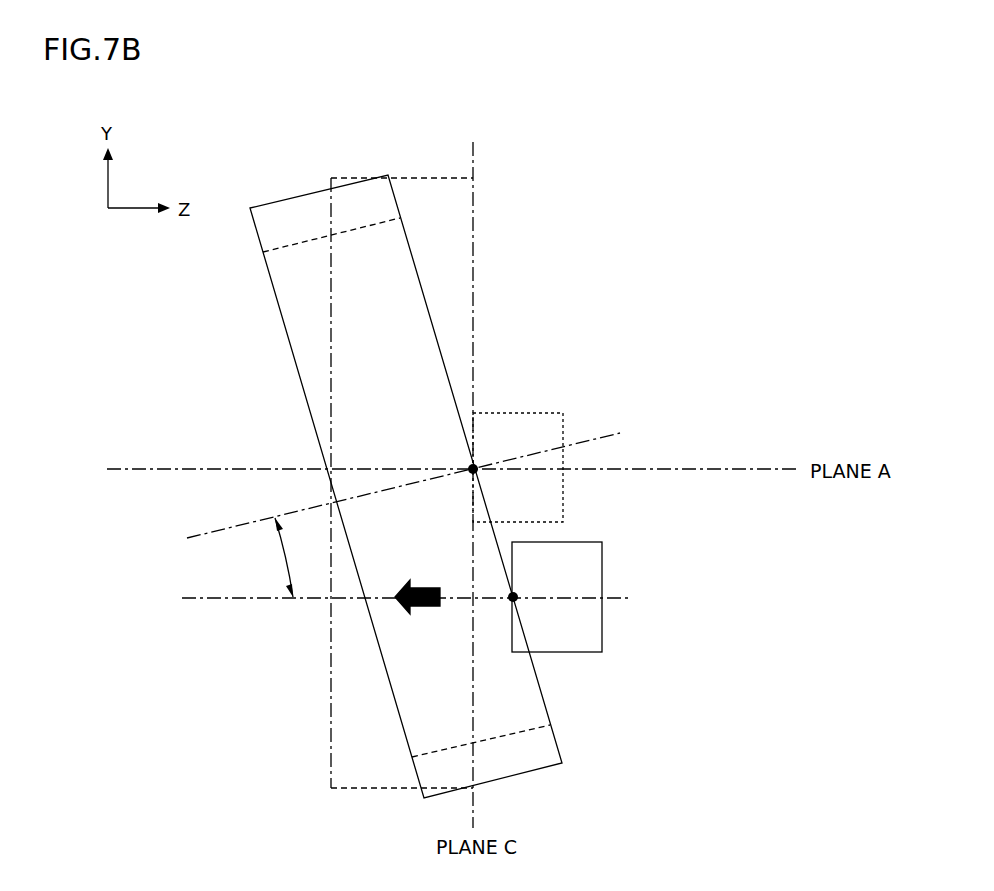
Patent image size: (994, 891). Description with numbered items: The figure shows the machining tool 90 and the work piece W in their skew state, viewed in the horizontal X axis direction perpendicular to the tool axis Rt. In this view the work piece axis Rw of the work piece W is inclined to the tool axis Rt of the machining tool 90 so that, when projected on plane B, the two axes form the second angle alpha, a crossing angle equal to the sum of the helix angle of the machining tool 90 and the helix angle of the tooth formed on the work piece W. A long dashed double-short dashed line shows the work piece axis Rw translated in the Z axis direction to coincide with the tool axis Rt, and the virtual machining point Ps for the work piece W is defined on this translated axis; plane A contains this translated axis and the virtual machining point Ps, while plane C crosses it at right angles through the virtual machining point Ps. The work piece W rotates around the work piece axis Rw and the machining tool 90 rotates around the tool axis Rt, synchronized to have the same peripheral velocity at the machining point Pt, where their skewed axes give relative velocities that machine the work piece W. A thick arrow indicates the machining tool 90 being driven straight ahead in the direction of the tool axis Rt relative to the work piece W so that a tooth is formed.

The work piece W is at (382, 200).
The machining tool 90 is at (500, 413).
The work piece axis Rw is at (636, 389).
The tool axis Rt is at (628, 598).
The virtual machining point Ps is at (470, 468).
The machining point Pt is at (511, 598).